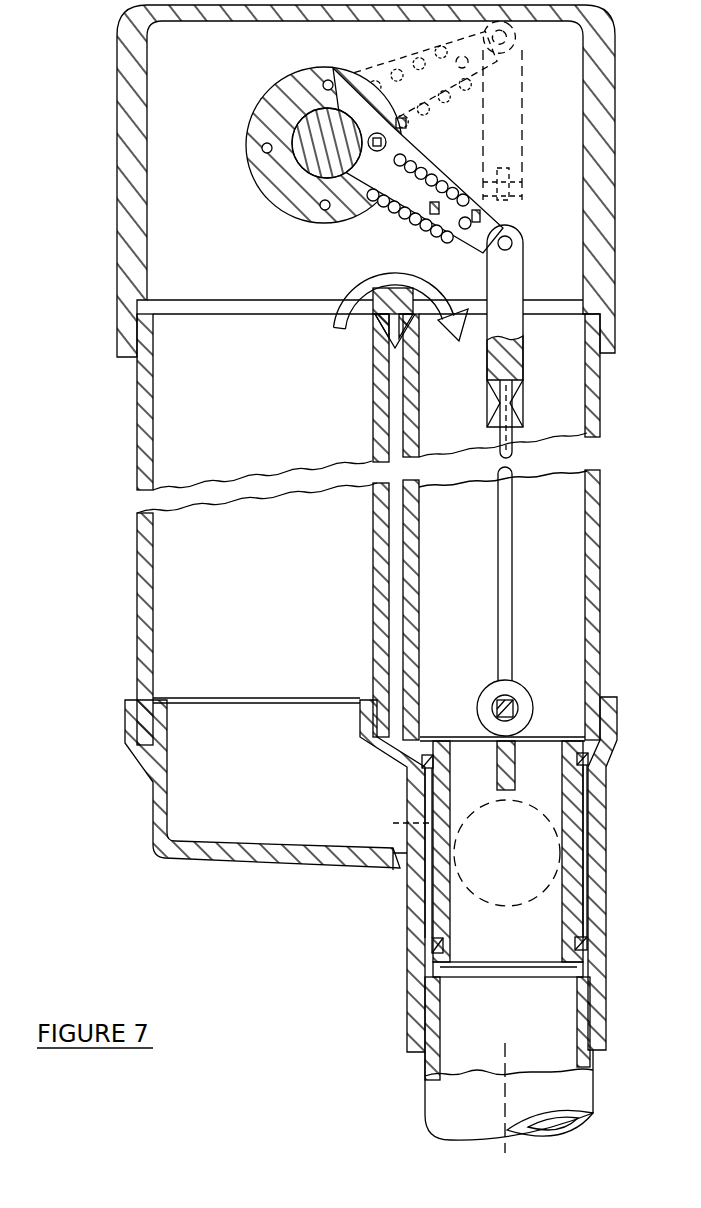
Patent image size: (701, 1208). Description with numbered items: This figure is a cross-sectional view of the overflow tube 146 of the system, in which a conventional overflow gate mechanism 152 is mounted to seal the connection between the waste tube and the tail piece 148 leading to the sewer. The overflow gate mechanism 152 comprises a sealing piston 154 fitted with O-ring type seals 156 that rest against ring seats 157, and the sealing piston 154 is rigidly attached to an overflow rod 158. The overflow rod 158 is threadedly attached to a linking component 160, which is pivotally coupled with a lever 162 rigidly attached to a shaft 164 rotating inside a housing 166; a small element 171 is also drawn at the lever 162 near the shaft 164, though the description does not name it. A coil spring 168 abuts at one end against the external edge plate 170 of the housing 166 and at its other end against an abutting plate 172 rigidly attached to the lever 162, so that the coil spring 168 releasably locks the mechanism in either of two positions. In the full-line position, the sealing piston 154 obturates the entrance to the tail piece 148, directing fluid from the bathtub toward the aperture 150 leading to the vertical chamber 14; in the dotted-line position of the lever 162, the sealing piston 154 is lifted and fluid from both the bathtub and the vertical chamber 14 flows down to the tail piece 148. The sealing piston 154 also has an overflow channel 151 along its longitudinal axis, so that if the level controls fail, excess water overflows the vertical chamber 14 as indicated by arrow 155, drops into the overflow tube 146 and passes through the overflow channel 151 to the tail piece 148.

The vertical chamber 14 is at (140, 418).
The overflow tube 146 is at (603, 408).
The tail piece 148 is at (428, 1103).
The aperture 150 is at (402, 842).
The overflow channel 151 is at (462, 750).
The overflow gate mechanism 152 is at (436, 583).
The sealing piston 154 is at (567, 915).
The arrow 155 is at (352, 291).
The O-ring type seals 156 is at (422, 762).
The ring seats 157 is at (425, 773).
The overflow rod 158 is at (512, 584).
The linking component 160 is at (527, 258).
The lever 162 is at (473, 240).
The shaft 164 is at (280, 100).
The housing 166 is at (300, 207).
The coil spring 168 is at (402, 237).
The external edge plate 170 is at (357, 70).
The pin 171 is at (380, 205).
The abutting plate 172 is at (458, 205).